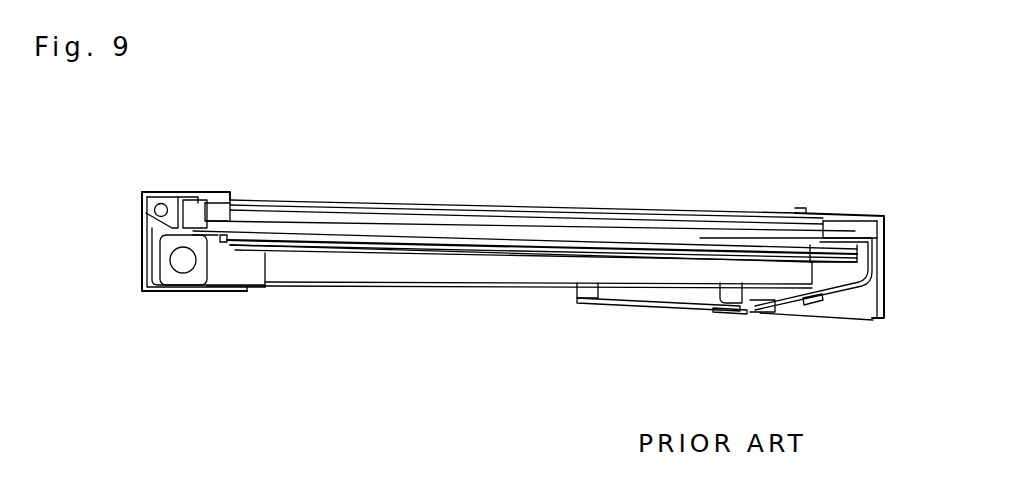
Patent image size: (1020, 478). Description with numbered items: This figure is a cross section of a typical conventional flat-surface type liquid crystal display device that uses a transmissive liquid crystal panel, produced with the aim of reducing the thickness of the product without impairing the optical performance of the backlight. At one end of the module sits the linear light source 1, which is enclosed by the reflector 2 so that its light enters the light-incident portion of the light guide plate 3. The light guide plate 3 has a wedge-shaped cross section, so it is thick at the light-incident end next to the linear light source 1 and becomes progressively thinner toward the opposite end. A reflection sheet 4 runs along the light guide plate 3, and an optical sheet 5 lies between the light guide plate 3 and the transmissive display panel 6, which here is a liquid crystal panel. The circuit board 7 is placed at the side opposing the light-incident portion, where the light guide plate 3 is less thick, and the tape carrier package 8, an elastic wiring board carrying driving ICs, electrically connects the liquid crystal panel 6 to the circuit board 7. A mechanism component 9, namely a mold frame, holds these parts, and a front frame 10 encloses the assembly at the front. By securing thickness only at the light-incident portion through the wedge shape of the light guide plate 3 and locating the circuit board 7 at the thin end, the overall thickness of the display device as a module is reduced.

The linear light source 1 is at (185, 257).
The reflector 2 is at (203, 290).
The light guide plate 3 is at (317, 268).
The reflection sheet 4 is at (422, 285).
The optical sheet 5 is at (313, 243).
The transmissive display panel 6 is at (422, 218).
The circuit board 7 is at (665, 310).
The tape carrier package 8 is at (798, 304).
The mechanism component 9 is at (742, 295).
The front frame 10 is at (163, 190).